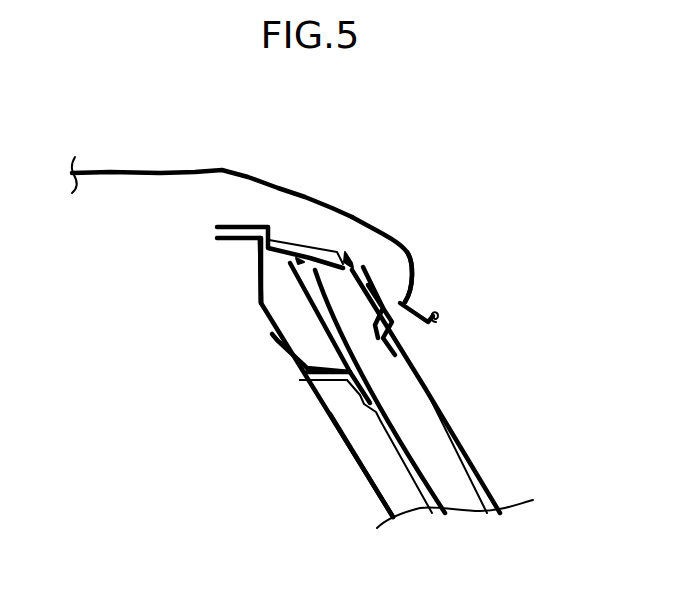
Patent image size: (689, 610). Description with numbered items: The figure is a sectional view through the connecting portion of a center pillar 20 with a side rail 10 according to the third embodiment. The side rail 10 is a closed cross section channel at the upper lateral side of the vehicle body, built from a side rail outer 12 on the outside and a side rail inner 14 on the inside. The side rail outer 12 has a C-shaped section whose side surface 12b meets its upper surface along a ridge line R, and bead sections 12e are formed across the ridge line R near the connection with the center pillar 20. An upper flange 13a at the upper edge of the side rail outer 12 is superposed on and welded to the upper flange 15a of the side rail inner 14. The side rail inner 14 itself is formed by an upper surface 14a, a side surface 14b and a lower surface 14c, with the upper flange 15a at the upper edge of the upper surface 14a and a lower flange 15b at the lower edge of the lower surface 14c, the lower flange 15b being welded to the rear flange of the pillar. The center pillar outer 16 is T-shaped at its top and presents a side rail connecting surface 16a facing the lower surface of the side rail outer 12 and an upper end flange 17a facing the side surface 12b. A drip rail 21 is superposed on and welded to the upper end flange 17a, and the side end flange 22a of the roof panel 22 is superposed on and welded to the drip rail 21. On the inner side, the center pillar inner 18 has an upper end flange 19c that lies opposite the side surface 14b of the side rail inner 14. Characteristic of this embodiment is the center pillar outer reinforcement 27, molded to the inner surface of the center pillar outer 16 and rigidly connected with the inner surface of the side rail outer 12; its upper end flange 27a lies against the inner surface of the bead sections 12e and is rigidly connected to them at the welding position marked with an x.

The side rail 10 is at (197, 350).
The side rail outer 12 is at (346, 251).
The side surface 12b is at (413, 283).
The bead sections 12e is at (281, 246).
The upper flange 13a is at (230, 226).
The side rail inner 14 is at (263, 306).
The upper surface 14a is at (259, 290).
The side surface 14b is at (275, 340).
The lower surface 14c is at (323, 379).
The upper flange 15a is at (220, 239).
The lower flange 15b is at (359, 402).
The center pillar outer 16 is at (474, 432).
The side rail connecting surface 16a is at (392, 340).
The upper end flange 17a is at (403, 298).
The center pillar inner 18 is at (362, 467).
The upper end flange 19c is at (300, 378).
The center pillar 20 is at (366, 492).
The drip rail 21 is at (385, 273).
The roof panel 22 is at (250, 172).
The side end flange 22a is at (422, 308).
The center pillar outer reinforcement 27 is at (429, 386).
The upper end flange 27a is at (296, 260).
The ridge line R is at (352, 267).